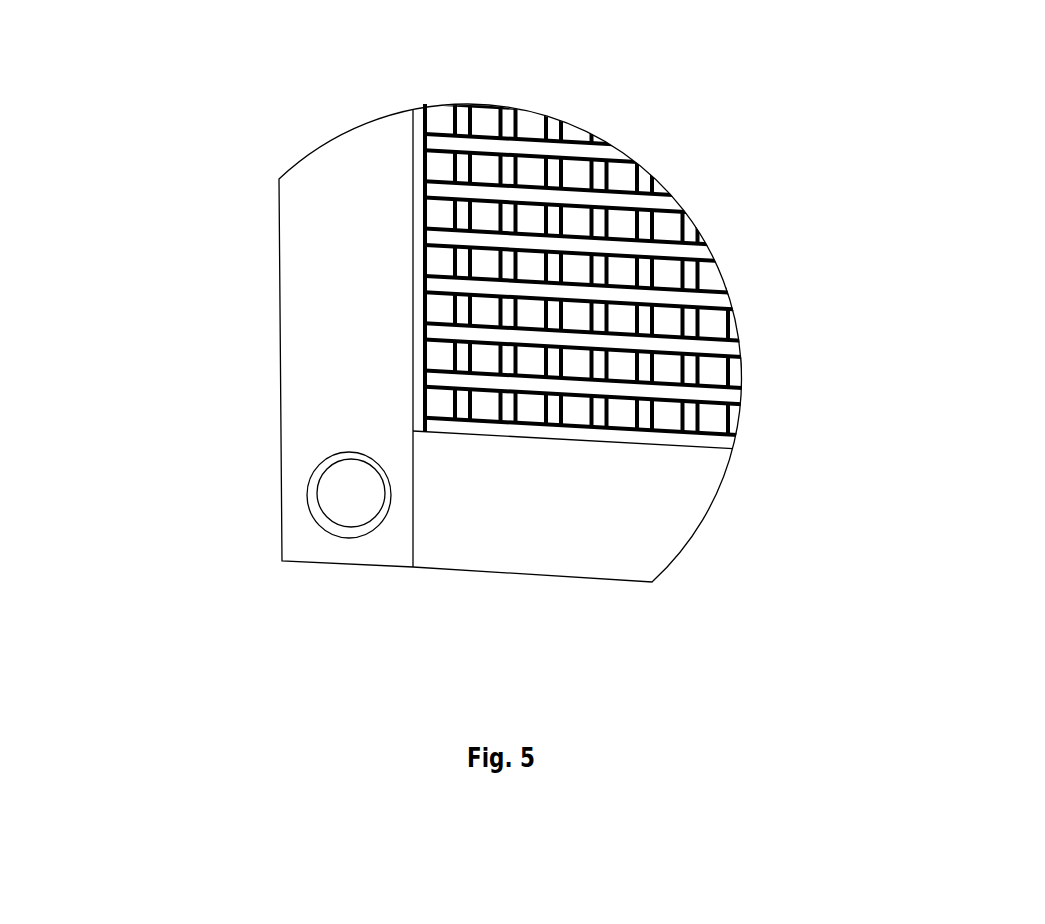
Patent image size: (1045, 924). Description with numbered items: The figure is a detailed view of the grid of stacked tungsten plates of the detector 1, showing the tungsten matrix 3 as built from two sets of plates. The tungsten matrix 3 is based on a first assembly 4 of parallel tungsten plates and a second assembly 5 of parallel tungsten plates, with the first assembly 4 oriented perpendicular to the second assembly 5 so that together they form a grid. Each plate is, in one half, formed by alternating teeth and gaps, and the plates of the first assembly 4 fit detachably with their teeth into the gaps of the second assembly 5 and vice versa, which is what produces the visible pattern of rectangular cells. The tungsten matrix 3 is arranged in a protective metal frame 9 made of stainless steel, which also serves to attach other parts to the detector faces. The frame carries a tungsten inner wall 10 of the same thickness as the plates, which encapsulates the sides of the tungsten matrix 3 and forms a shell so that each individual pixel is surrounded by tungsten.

The air treatment device 1 is at (206, 193).
The tungsten matrix 3 is at (733, 235).
The first assembly 4 is at (722, 350).
The second assembly 5 is at (697, 421).
The protective metal frame 9 is at (337, 340).
The tungsten inner wall 10 is at (424, 146).